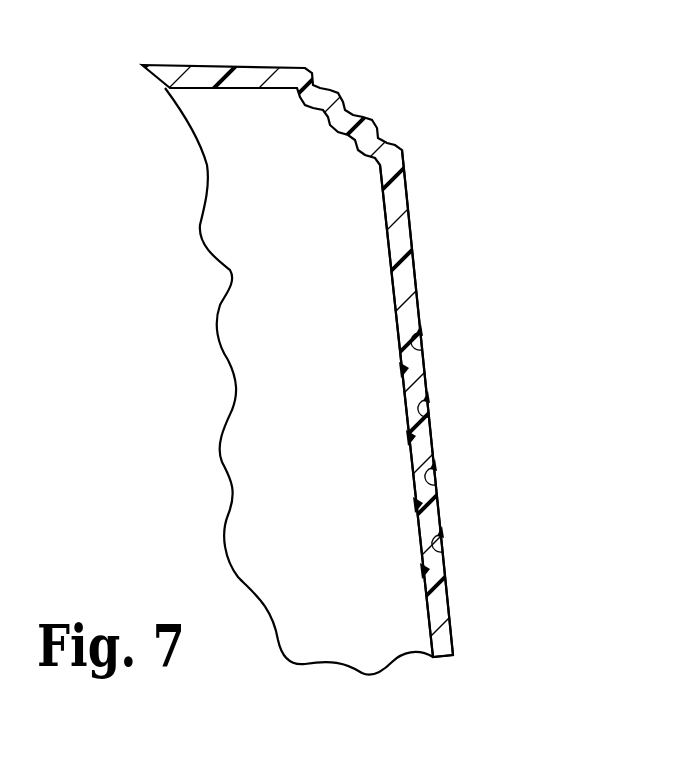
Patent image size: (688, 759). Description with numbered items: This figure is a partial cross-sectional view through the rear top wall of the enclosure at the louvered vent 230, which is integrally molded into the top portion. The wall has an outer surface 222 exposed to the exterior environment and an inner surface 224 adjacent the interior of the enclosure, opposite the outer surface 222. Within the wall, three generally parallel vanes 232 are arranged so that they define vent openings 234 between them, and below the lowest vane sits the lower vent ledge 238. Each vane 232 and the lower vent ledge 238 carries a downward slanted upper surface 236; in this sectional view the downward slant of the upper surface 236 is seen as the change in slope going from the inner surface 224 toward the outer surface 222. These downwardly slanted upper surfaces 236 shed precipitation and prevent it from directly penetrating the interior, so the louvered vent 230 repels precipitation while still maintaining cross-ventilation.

The outer surface 222 is at (412, 218).
The inner surface 224 is at (386, 206).
The louvered vent 230 is at (478, 287).
The vanes 232 is at (410, 370).
The vent openings 234 is at (420, 362).
The downward slanted upper surface 236 is at (425, 365).
The lower vent ledge 238 is at (448, 568).